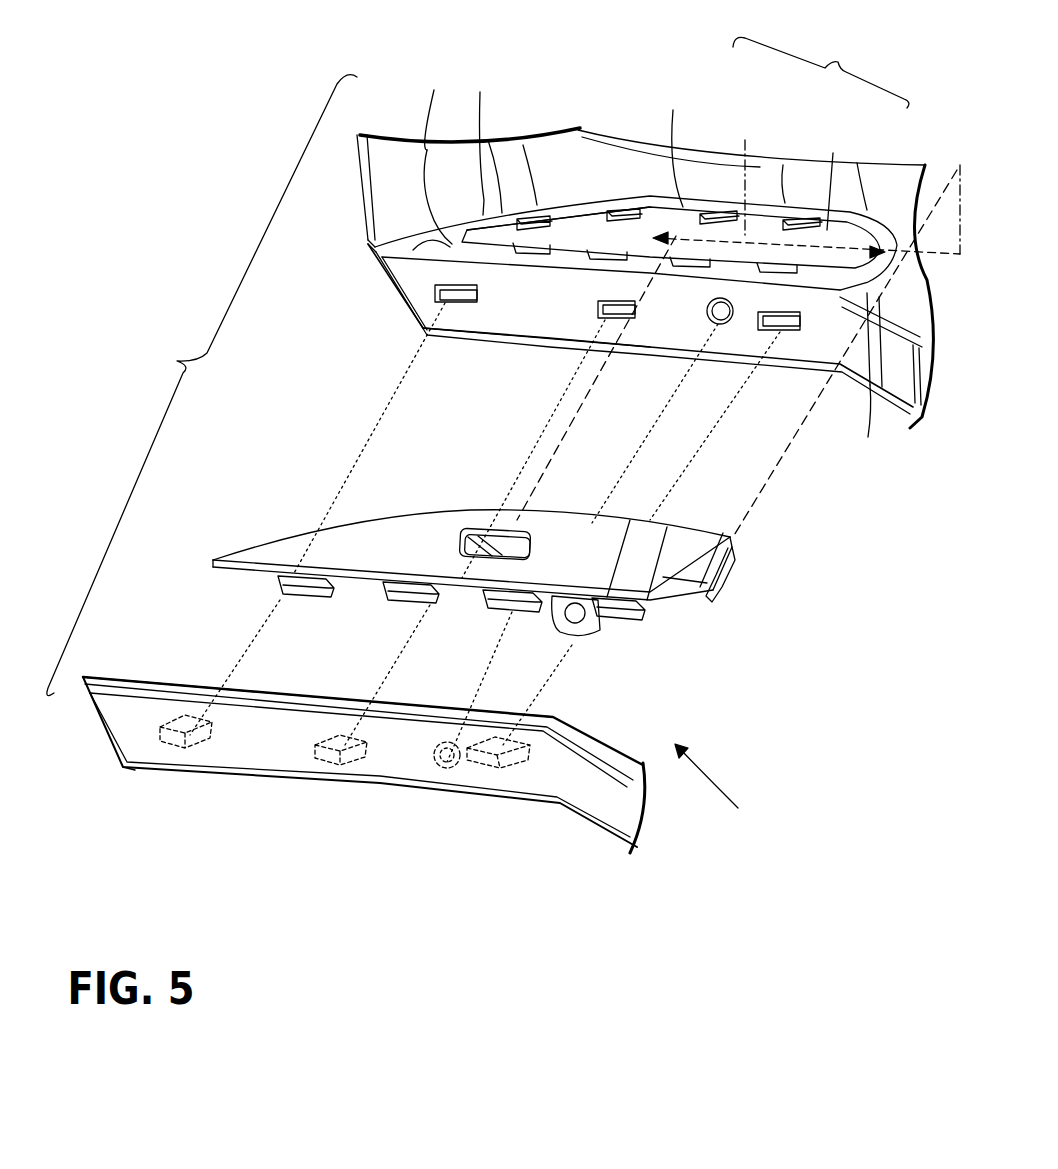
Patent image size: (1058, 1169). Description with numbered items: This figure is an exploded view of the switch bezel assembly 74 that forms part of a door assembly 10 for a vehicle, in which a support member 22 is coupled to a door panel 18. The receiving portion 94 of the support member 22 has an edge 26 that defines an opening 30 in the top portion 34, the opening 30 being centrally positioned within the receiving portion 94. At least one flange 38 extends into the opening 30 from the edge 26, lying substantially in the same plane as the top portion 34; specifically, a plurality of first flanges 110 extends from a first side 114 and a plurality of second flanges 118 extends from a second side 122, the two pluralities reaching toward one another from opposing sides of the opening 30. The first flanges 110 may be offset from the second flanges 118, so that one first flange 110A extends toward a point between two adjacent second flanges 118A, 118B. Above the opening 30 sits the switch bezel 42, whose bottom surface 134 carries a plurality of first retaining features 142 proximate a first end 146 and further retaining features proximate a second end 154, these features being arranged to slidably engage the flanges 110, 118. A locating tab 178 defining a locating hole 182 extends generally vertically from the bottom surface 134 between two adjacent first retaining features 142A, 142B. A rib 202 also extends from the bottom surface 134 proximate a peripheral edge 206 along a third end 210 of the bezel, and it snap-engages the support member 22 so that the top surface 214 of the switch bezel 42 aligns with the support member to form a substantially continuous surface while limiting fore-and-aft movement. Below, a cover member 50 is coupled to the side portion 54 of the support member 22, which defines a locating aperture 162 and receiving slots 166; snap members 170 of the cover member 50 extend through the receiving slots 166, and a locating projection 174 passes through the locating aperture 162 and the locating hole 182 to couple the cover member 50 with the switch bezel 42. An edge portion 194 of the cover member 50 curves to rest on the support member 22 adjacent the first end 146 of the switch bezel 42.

The door assembly 10 is at (202, 385).
The door panel 18 is at (363, 135).
The support member 22 is at (890, 379).
The edge 26 is at (479, 139).
The opening 30 is at (584, 220).
The top portion 34 is at (382, 258).
The flange 38 is at (821, 67).
The switch bezel 42 is at (293, 552).
The cover member 50 is at (603, 797).
The side portion 54 is at (807, 345).
The switch bezel assembly 74 is at (718, 790).
The receiving portion 94 is at (434, 105).
The first flanges 110 is at (722, 258).
The first flange 110A is at (550, 273).
The first side 114 is at (427, 328).
The second flanges 118 is at (728, 204).
The second flange 118A is at (522, 218).
The second flange 118B is at (626, 212).
The second side 122 is at (676, 180).
The bottom surface 134 is at (357, 582).
The first retaining features 142 is at (655, 616).
The first retaining feature 142A is at (277, 577).
The first retaining feature 142B is at (407, 580).
The first end 146 is at (458, 592).
The second end 154 is at (467, 513).
The locating aperture 162 is at (706, 326).
The receiving slots 166 is at (435, 297).
The snap members 170 is at (160, 742).
The locating projection 174 is at (445, 767).
The locating tab 178 is at (605, 630).
The locating hole 182 is at (574, 634).
The edge portion 194 is at (142, 680).
The rib 202 is at (723, 590).
The peripheral edge 206 is at (680, 603).
The third end 210 is at (730, 555).
The top surface 214 is at (337, 545).